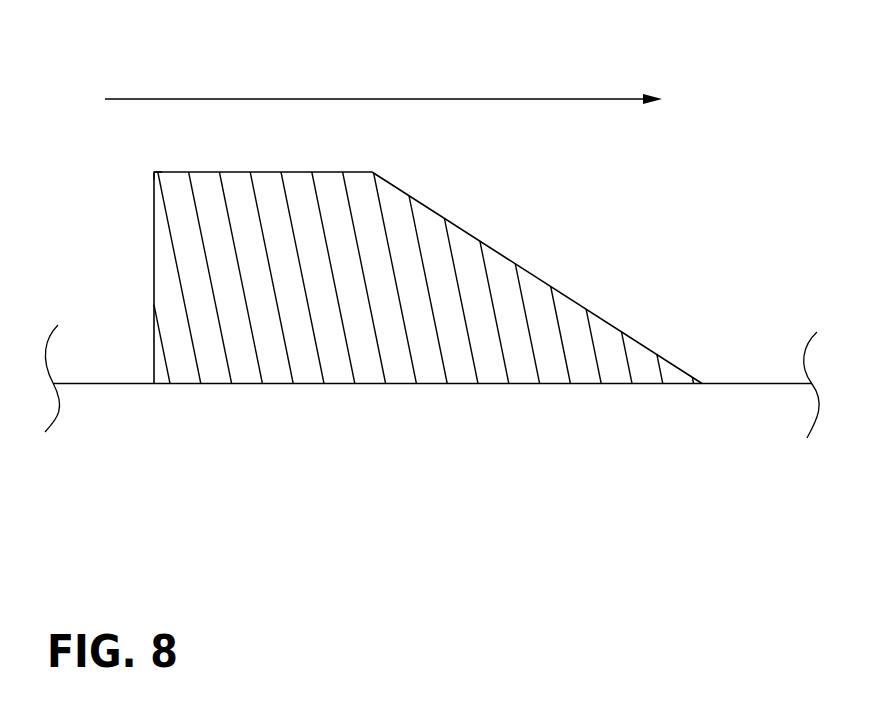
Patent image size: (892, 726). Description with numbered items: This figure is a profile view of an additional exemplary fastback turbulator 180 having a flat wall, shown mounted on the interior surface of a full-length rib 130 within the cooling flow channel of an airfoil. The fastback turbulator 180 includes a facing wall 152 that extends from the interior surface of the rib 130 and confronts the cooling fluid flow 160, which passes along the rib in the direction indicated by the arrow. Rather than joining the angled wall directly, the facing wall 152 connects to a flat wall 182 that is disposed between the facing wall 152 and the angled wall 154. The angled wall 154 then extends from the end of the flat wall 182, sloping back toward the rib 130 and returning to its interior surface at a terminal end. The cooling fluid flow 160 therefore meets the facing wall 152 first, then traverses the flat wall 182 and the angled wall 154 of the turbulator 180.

The full-length rib 130 is at (115, 384).
The facing wall 152 is at (153, 222).
The angled wall 154 is at (530, 273).
The cooling fluid flow 160 is at (481, 99).
The fastback turbulator 180 is at (163, 152).
The flat wall 182 is at (290, 172).